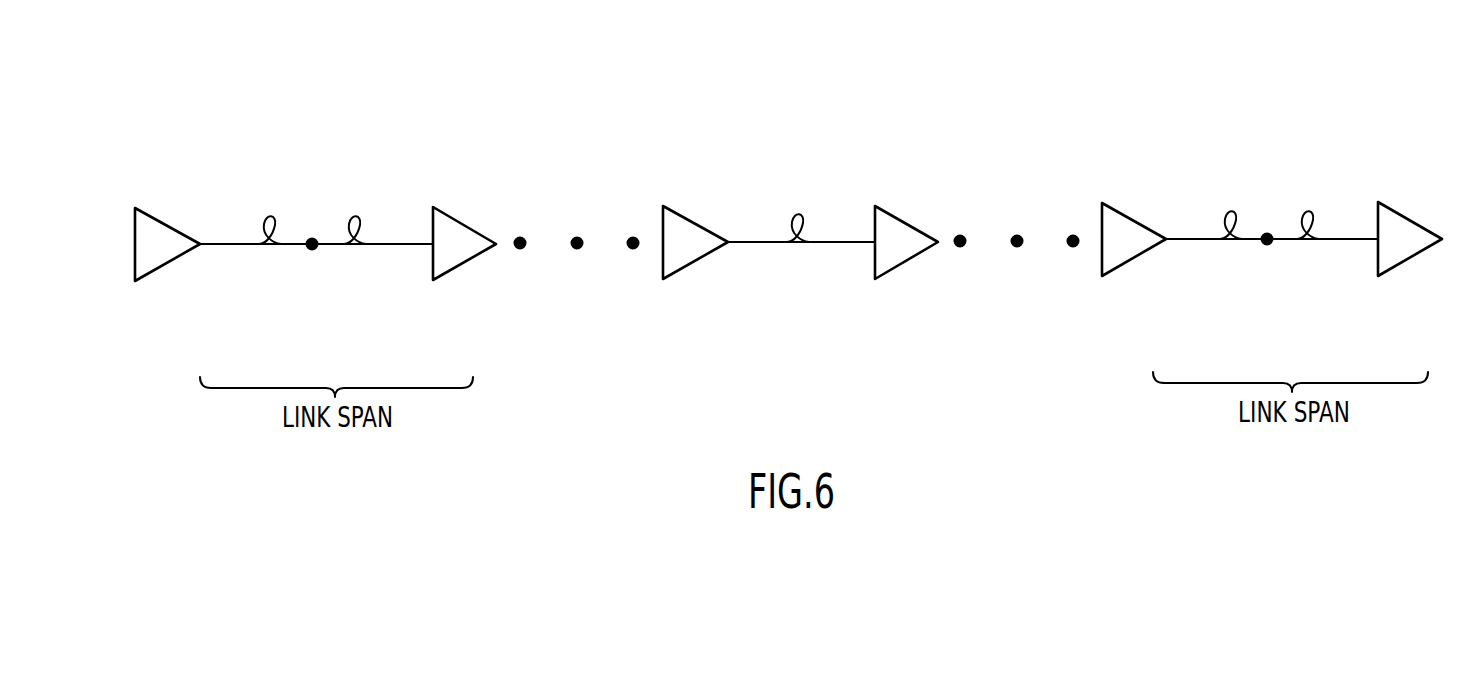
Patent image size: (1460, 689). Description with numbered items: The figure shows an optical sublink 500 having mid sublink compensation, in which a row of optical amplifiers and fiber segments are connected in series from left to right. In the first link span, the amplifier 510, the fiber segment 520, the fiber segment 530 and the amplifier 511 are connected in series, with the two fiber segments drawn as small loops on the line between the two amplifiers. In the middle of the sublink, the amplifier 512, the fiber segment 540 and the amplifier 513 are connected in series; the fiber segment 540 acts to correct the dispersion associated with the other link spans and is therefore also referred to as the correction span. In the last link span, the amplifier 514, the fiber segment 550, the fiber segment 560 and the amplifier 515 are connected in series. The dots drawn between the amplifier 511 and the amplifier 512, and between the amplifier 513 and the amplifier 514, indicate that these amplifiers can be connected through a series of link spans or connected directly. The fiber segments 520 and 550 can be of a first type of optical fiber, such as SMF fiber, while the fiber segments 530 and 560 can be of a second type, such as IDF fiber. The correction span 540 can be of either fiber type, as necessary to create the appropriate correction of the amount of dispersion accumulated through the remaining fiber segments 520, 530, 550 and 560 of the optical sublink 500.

The optical sublink 500 is at (1058, 58).
The optical amplifier 510 is at (165, 264).
The optical amplifier 511 is at (463, 264).
The optical amplifier 512 is at (693, 262).
The optical amplifier 513 is at (905, 260).
The optical amplifier 514 is at (1133, 259).
The optical amplifier 515 is at (1405, 258).
The fiber segment 520 is at (273, 216).
The fiber segment 530 is at (358, 216).
The fiber segment (correction span) 540 is at (801, 214).
The fiber segment 550 is at (1234, 211).
The fiber segment 560 is at (1311, 211).